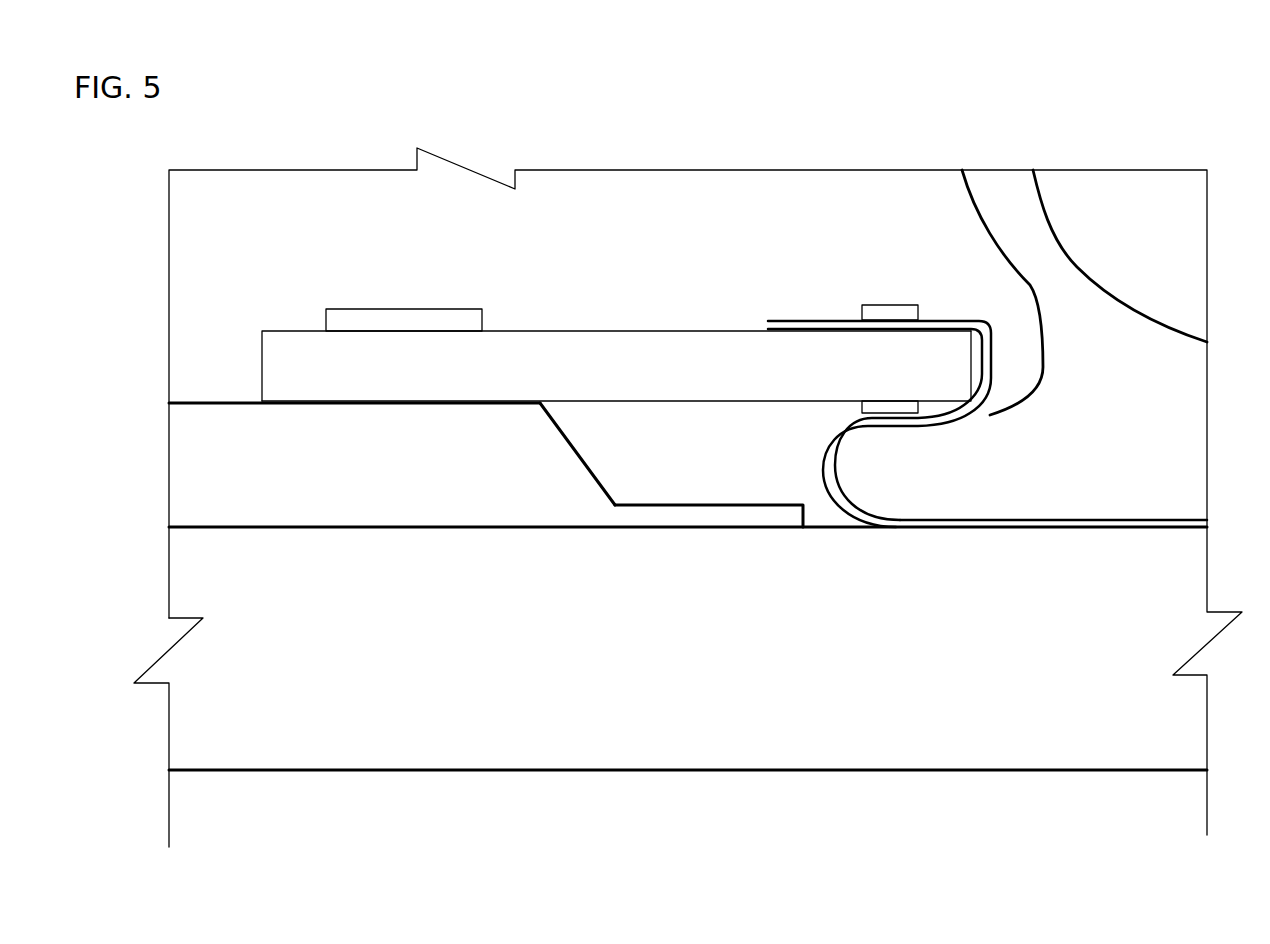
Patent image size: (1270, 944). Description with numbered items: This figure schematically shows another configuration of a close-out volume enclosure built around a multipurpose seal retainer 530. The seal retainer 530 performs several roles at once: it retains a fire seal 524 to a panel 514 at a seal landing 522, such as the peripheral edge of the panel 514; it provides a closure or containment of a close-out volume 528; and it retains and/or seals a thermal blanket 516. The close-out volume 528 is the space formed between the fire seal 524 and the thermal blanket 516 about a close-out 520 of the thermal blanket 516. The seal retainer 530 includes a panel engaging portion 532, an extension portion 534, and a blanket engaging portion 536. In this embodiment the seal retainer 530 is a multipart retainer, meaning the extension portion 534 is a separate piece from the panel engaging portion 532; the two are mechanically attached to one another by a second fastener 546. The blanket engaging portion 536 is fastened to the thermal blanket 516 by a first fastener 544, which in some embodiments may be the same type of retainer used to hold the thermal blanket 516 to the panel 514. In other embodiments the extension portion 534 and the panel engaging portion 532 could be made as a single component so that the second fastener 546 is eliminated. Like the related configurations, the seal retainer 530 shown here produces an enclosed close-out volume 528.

The panel 514 is at (582, 747).
The thermal blanket 516 is at (422, 500).
The close-out 520 is at (717, 517).
The seal landing 522 is at (1030, 603).
The fire seal 524 is at (1102, 313).
The close-out volume 528 is at (612, 436).
The seal retainer 530 is at (776, 270).
The panel engaging portion 532 is at (1073, 520).
The extension portion 534 is at (631, 345).
The blanket engaging portion 536 is at (297, 318).
The first fastener 544 is at (408, 320).
The second fastener 546 is at (893, 312).